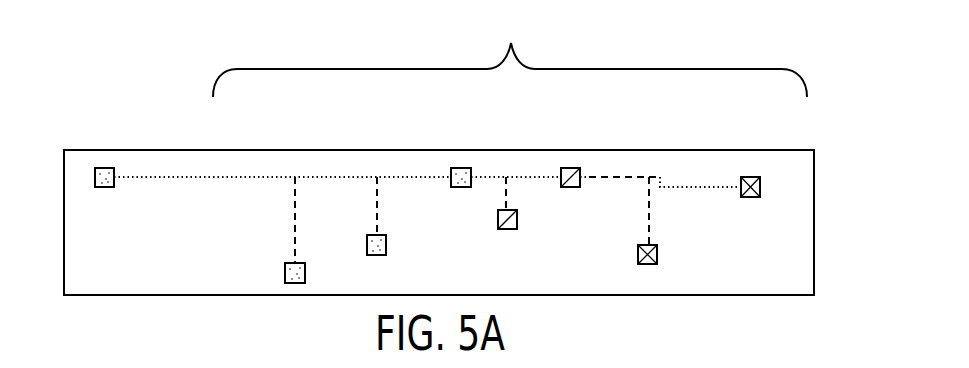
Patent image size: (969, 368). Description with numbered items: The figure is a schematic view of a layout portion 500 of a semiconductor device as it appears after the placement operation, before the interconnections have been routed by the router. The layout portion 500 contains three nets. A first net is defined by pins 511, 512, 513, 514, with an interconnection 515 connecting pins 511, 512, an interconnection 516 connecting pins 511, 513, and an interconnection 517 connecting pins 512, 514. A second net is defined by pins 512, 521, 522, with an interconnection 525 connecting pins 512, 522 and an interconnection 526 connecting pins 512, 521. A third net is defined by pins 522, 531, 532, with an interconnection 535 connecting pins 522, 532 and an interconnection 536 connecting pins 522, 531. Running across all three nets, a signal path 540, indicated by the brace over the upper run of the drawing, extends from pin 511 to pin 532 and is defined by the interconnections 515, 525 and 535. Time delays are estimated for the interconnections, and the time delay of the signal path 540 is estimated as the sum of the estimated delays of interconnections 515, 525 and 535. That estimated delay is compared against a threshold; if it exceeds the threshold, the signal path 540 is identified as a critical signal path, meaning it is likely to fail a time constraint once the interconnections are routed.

The layout portion 500 is at (809, 66).
The signal path 540 is at (510, 53).
The pin 511 is at (104, 168).
The pin 512 is at (461, 189).
The pin 513 is at (285, 272).
The pin 514 is at (367, 245).
The interconnection 515 is at (243, 177).
The interconnection 516 is at (293, 218).
The interconnection 517 is at (378, 205).
The pin 521 is at (505, 230).
The pin 522 is at (571, 189).
The interconnection 525 is at (516, 177).
The interconnection 526 is at (505, 197).
The pin 531 is at (658, 257).
The pin 532 is at (762, 188).
The interconnection 535 is at (680, 187).
The interconnection 536 is at (650, 228).